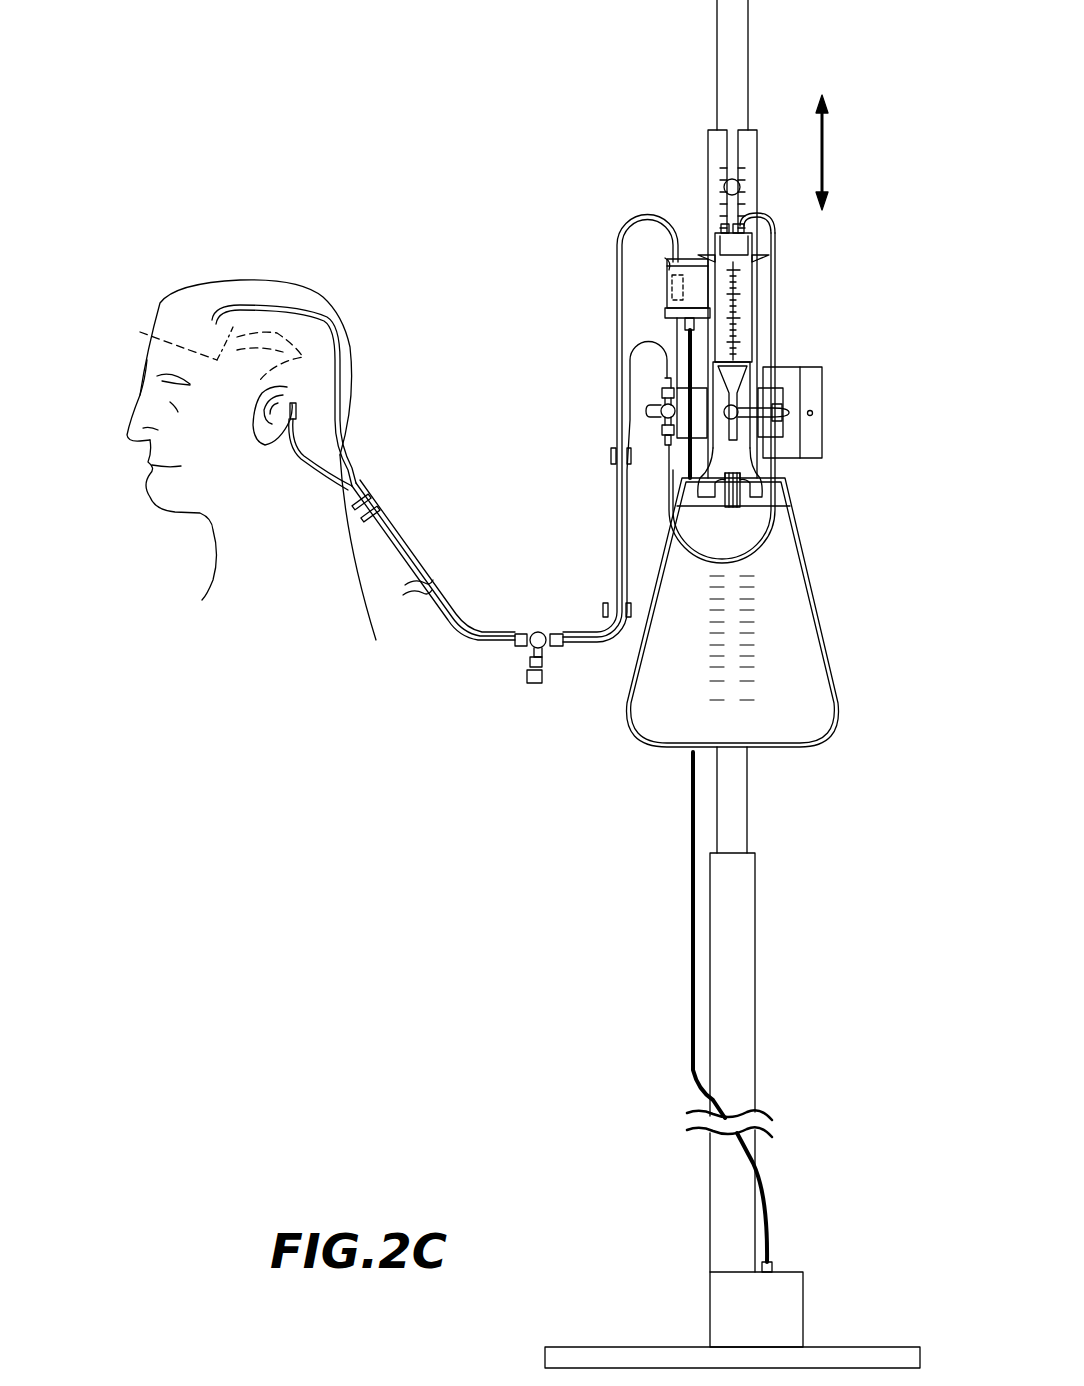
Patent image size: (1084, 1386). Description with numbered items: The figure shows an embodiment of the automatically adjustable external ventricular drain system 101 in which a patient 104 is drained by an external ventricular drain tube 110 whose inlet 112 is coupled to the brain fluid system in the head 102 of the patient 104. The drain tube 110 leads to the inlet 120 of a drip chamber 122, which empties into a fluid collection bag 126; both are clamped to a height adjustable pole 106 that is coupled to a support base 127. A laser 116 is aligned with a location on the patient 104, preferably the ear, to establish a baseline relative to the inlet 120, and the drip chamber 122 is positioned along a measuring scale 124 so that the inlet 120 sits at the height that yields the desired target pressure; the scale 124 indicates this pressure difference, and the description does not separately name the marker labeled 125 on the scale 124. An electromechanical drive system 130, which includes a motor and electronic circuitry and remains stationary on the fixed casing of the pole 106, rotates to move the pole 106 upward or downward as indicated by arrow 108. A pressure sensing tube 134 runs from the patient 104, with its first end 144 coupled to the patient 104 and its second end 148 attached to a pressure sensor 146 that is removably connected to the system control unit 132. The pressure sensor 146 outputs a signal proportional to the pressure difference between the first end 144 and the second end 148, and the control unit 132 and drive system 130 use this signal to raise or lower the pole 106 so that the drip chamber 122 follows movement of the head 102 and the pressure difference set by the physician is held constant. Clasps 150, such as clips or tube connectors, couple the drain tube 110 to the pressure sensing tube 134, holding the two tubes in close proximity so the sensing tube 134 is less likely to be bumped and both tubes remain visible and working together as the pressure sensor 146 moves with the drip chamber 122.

The automatically adjustable external ventricular drain system 101 is at (375, 146).
The head 102 is at (225, 282).
The patient 104 is at (305, 258).
The height adjustable pole 106 is at (740, 46).
The arrow 108 is at (828, 150).
The external ventricular drain tube 110 is at (343, 462).
The inlet 112 is at (140, 332).
The laser 116 is at (812, 397).
The inlet of the drip chamber 120 is at (740, 259).
The drip chamber 122 is at (745, 322).
The measuring scale 124 is at (715, 170).
The indicator 125 is at (724, 187).
The fluid collection bag 126 is at (797, 612).
The support base 127 is at (875, 1352).
The electromechanical drive system 130 is at (795, 1278).
The system control unit 132 is at (700, 297).
The pressure sensing tube 134 is at (622, 235).
The first end 144 is at (297, 412).
The pressure sensor 146 is at (675, 292).
The second end 148 is at (666, 266).
The clasps 150 is at (378, 518).